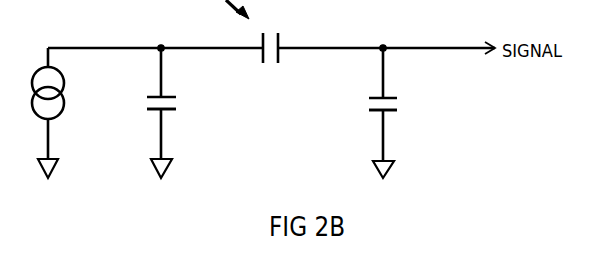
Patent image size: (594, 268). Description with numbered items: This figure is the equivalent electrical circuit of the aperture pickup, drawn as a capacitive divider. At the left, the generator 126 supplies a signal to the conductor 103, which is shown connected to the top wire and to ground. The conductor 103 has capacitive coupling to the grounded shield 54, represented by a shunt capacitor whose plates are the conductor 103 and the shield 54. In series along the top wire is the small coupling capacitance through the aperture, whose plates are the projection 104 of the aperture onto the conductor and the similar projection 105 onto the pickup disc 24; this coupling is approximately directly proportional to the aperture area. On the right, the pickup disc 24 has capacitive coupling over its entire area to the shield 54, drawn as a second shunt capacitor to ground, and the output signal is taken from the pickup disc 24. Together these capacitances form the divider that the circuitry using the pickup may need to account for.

The generator 126 is at (66, 108).
The conductor 103 is at (172, 97).
The shield 54 is at (175, 110).
The projection of the aperture onto the conductor 104 is at (262, 38).
The projection onto the pickup disc 105 is at (282, 40).
The pickup disc 24 is at (375, 97).